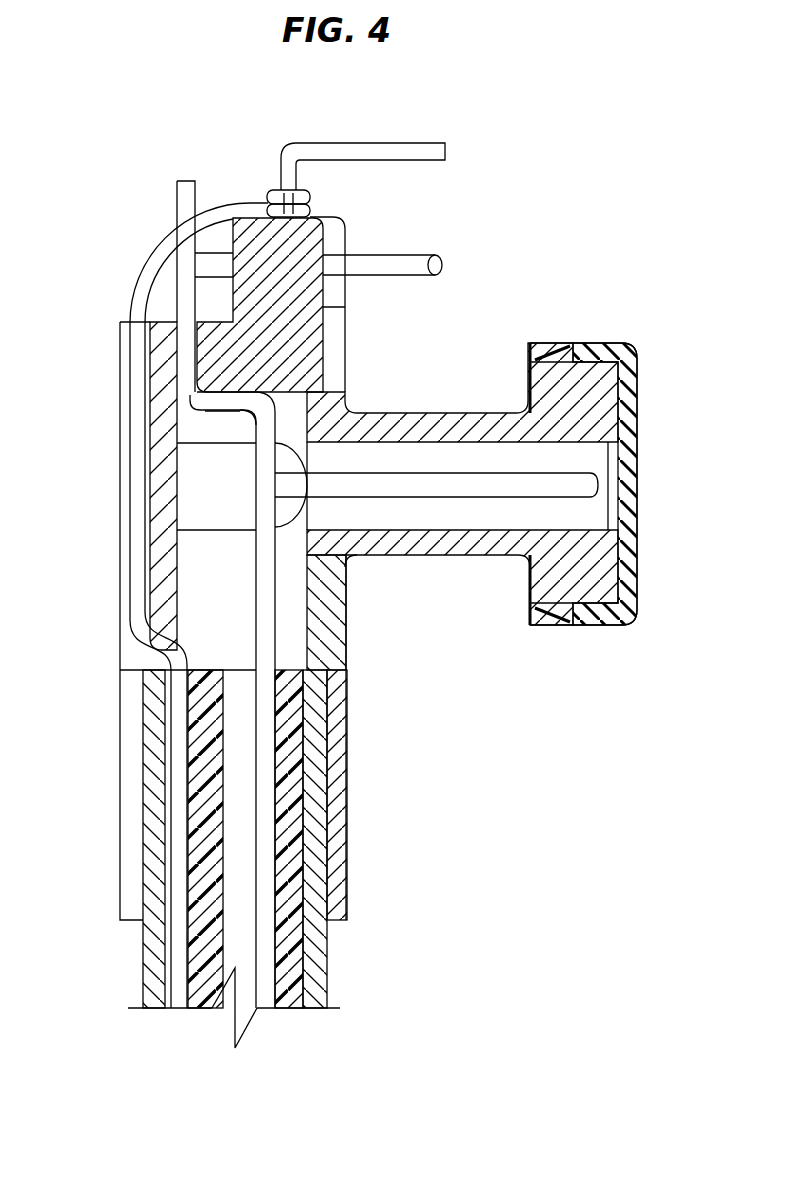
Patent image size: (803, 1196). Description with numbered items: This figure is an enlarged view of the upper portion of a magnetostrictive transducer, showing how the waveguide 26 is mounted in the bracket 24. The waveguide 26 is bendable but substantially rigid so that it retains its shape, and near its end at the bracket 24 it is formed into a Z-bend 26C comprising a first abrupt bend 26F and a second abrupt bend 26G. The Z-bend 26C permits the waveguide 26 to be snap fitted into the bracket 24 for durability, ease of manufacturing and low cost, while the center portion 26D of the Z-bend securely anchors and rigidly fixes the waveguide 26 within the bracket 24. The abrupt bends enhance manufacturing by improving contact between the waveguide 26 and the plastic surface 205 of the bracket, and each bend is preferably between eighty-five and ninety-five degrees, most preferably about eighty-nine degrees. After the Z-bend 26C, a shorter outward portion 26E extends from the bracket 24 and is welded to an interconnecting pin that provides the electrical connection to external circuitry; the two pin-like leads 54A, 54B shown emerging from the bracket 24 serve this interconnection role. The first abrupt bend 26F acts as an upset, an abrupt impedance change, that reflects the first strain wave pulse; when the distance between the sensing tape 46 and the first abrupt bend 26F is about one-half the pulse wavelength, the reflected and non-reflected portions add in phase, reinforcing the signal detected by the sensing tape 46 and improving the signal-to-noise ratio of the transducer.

The bracket 24 is at (296, 316).
The waveguide 26 is at (267, 755).
The Z-bend 26C is at (292, 431).
The center portion of the Z-bend 26D is at (215, 415).
The shorter outward portion 26E is at (175, 201).
The first abrupt bend 26F is at (247, 417).
The second abrupt bend 26G is at (190, 398).
The plastic surface 205 is at (312, 393).
The sensing tape 46 is at (588, 470).
The first tube 54A is at (413, 143).
The second tube 54B is at (410, 255).